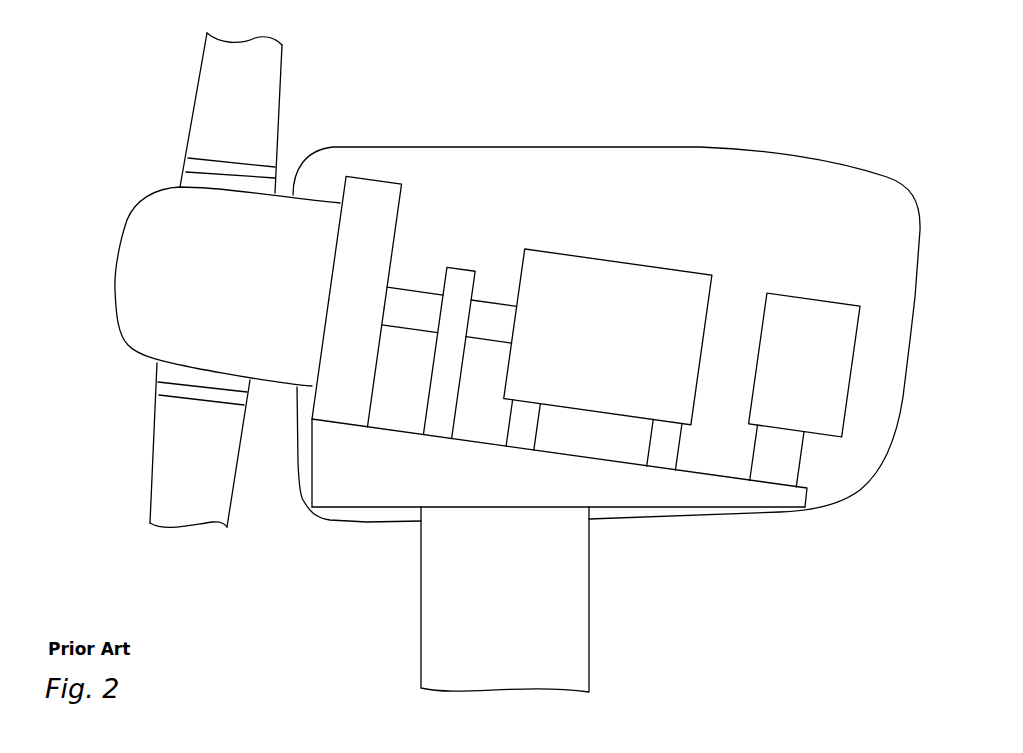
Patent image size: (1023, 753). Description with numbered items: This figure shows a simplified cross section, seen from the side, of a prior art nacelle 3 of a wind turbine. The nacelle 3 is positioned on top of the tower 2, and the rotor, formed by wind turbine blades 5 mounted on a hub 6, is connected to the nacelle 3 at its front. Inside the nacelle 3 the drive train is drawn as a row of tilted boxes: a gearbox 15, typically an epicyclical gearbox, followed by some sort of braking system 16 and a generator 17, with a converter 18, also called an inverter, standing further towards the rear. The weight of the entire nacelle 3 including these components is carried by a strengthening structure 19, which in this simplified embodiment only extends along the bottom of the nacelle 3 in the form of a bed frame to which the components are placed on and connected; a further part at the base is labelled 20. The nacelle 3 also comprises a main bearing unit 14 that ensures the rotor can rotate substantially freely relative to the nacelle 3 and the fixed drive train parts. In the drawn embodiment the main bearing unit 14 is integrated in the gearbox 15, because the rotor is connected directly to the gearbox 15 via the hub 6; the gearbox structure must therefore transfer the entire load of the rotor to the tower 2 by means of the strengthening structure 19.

The tower 2 is at (565, 660).
The wind turbine nacelle 3 is at (950, 169).
The wind turbine blade 5 is at (252, 108).
The hub 6 is at (190, 259).
The main bearing unit 14 is at (343, 382).
The gearbox 15 is at (370, 205).
The braking system 16 is at (460, 285).
The generator 17 is at (580, 297).
The converter 18 is at (818, 337).
The strengthening structure 19 is at (662, 488).
The yaw bearing 20 is at (629, 498).